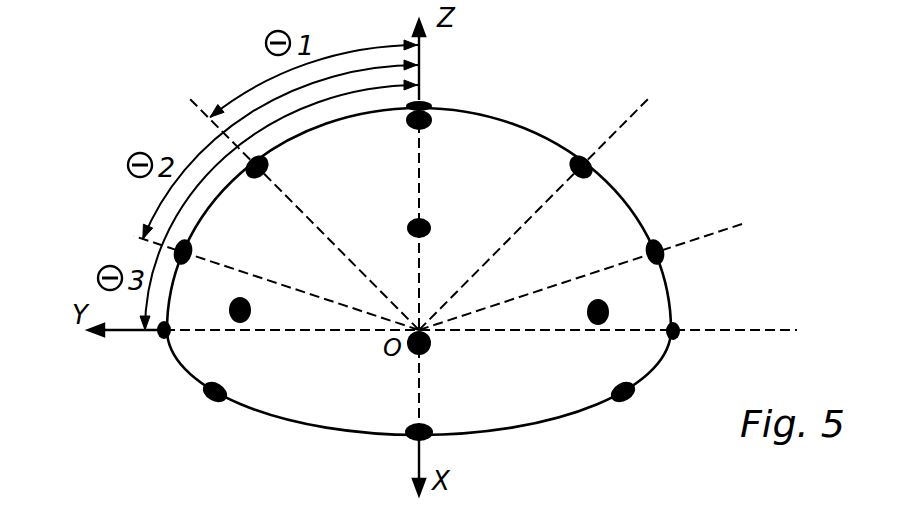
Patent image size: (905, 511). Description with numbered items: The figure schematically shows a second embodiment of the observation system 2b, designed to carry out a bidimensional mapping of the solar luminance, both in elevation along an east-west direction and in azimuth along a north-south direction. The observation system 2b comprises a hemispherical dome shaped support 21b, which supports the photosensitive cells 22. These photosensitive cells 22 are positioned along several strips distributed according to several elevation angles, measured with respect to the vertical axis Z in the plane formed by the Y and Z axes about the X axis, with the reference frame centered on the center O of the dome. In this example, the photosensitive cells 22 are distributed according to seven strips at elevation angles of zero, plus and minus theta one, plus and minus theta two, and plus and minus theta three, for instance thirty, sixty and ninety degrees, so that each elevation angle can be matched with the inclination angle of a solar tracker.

The observation system 2b is at (683, 103).
The hemispherical dome shaped support 21b is at (493, 137).
The photosensitive cells 22 is at (591, 172).